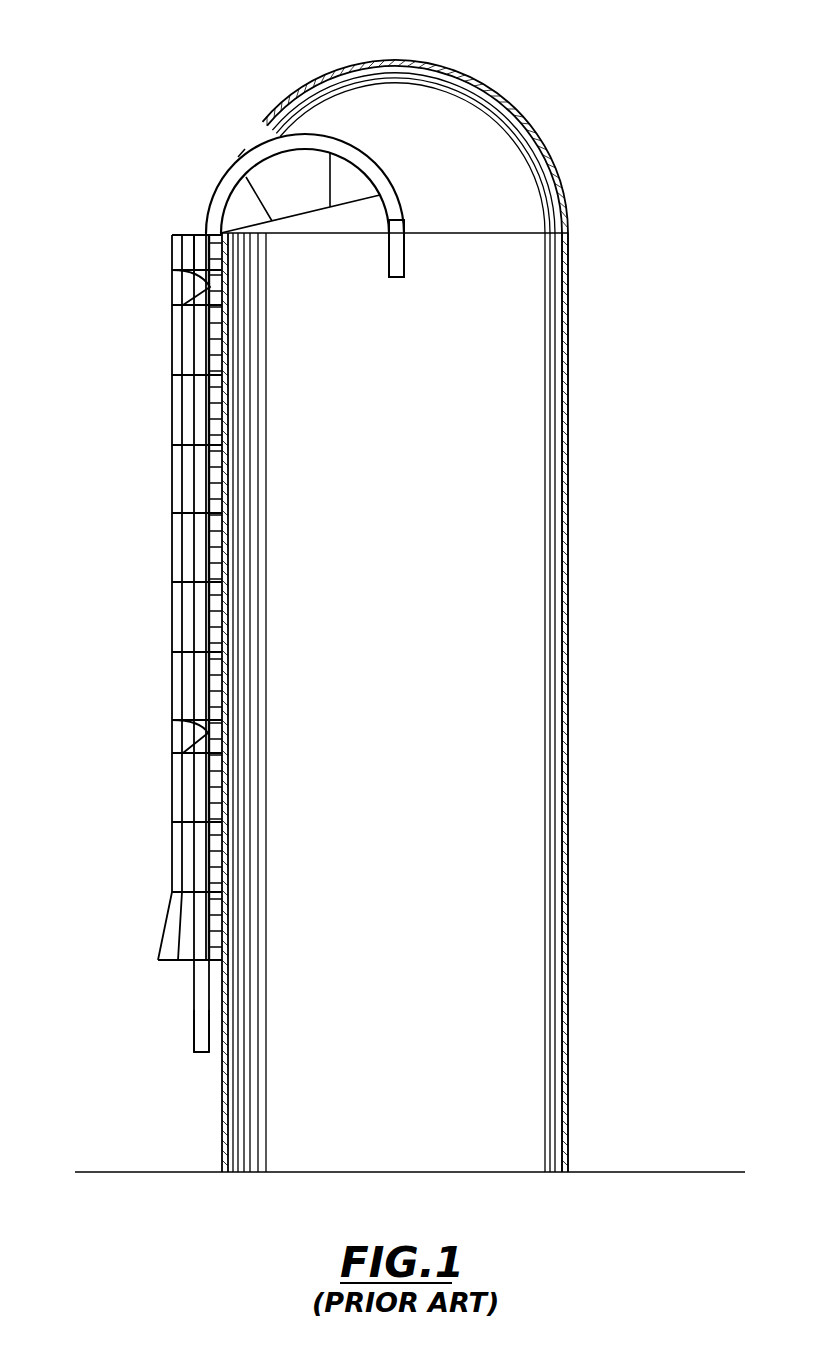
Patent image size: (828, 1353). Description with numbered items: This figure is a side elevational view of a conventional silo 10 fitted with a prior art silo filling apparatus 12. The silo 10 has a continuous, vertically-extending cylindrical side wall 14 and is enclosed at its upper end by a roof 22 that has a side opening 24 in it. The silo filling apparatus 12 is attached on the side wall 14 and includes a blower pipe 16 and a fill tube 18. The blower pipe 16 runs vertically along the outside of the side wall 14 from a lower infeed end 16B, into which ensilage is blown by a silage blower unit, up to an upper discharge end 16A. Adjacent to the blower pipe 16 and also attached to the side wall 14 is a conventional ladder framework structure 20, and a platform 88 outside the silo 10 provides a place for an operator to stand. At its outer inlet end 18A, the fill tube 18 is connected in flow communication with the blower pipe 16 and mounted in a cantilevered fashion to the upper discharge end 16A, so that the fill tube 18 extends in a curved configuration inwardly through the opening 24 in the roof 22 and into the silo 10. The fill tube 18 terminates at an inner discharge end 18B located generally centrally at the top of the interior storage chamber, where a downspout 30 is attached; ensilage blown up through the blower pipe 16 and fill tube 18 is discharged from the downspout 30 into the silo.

The silo 10 is at (605, 210).
The silo filling apparatus 12 is at (133, 638).
The side wall 14 is at (588, 493).
The blower pipe 16 is at (154, 651).
The upper discharge end 16A is at (213, 258).
The lower infeed end 16B is at (200, 1033).
The fill tube 18 is at (282, 154).
The outer inlet end 18A is at (208, 210).
The inner discharge end 18B is at (403, 200).
The ladder framework structure 20 is at (160, 590).
The roof 22 is at (545, 117).
The side opening 24 is at (240, 154).
The downspout 30 is at (398, 265).
The platform 88 is at (207, 290).